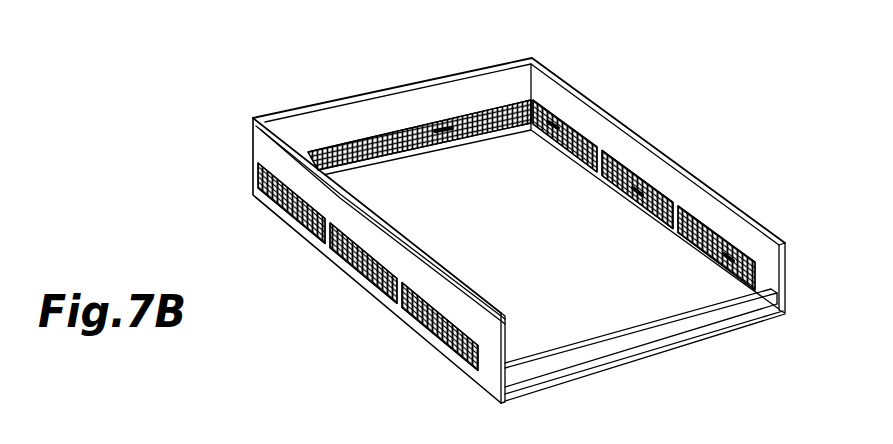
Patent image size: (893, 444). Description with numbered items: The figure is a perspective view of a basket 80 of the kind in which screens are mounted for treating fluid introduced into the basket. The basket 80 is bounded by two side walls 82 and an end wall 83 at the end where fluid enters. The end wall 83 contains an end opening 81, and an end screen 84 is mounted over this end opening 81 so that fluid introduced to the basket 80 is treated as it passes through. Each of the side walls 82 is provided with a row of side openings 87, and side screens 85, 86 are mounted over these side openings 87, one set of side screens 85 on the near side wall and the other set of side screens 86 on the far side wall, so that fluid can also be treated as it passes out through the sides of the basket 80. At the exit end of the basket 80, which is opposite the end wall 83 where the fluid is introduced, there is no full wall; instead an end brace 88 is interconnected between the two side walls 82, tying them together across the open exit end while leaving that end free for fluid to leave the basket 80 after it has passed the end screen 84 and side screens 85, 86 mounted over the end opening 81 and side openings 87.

The basket 80 is at (352, 296).
The end opening 81 is at (390, 133).
The side walls 82 is at (747, 243).
The end wall 83 is at (347, 120).
The end screen 84 is at (452, 128).
The side screen 85 is at (366, 264).
The side screen 86 is at (553, 122).
The side openings 87 is at (573, 130).
The end brace 88 is at (657, 335).